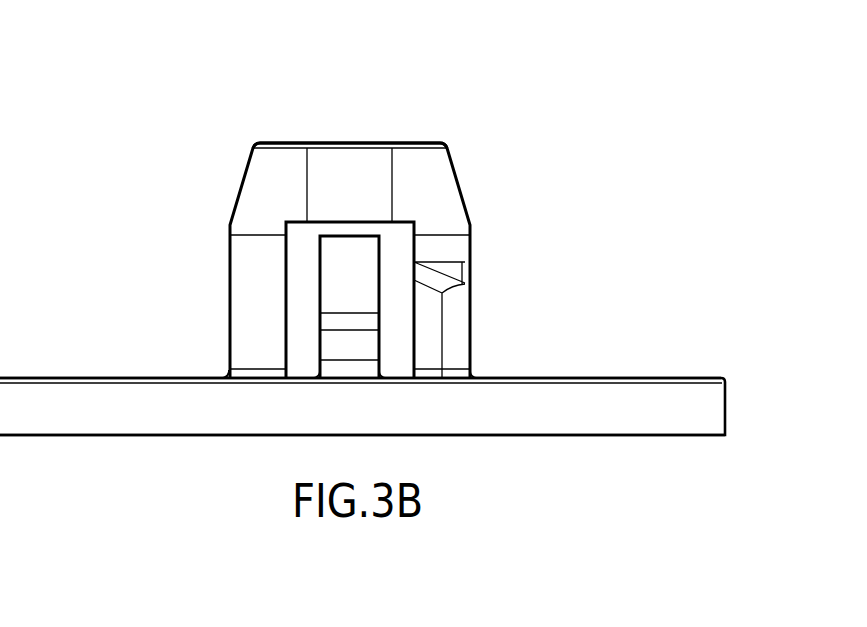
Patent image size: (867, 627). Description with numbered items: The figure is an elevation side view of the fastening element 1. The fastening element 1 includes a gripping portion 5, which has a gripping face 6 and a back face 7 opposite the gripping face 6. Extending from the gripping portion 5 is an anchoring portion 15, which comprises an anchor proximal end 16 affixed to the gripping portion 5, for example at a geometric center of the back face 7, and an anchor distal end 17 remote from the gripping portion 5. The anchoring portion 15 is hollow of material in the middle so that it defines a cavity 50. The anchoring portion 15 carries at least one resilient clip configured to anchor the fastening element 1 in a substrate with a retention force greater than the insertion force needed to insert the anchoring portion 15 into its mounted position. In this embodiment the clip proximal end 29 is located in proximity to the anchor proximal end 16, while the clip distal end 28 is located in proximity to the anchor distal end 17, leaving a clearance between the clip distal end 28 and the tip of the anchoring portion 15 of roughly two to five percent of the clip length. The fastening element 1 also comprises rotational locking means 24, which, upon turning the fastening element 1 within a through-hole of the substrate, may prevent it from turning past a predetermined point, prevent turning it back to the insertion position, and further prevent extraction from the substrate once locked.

The fastening element 1 is at (123, 93).
The gripping portion 5 is at (538, 453).
The gripping face 6 is at (610, 435).
The back face 7 is at (610, 378).
The anchoring portion 15 is at (470, 181).
The anchor proximal end 16 is at (228, 372).
The anchor distal end 17 is at (438, 137).
The rotational locking means 24 is at (465, 284).
The clip distal end 28 is at (335, 248).
The clip proximal end 29 is at (307, 367).
The cavity 50 is at (393, 257).